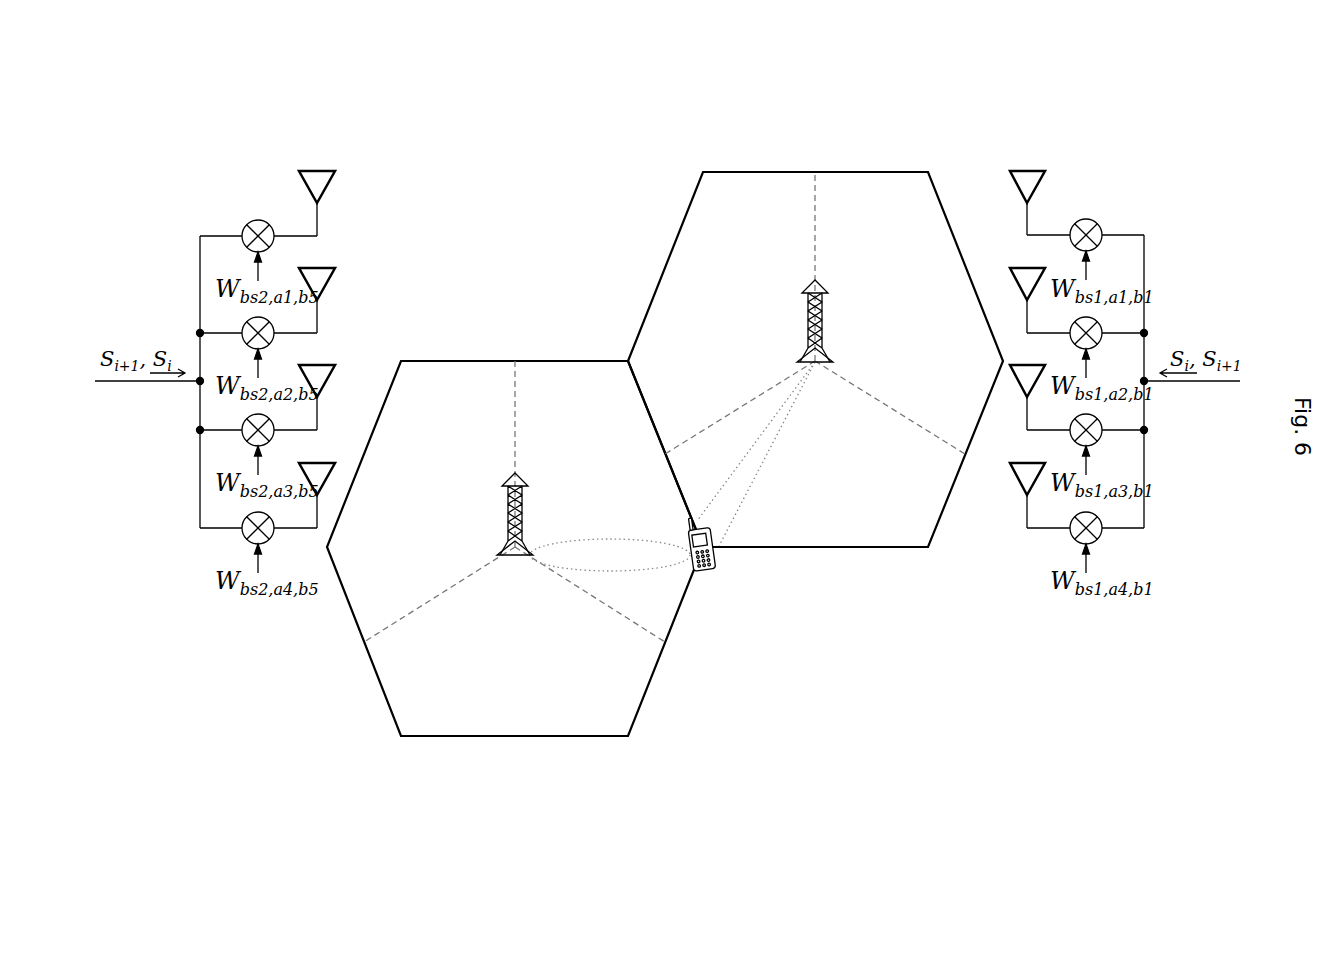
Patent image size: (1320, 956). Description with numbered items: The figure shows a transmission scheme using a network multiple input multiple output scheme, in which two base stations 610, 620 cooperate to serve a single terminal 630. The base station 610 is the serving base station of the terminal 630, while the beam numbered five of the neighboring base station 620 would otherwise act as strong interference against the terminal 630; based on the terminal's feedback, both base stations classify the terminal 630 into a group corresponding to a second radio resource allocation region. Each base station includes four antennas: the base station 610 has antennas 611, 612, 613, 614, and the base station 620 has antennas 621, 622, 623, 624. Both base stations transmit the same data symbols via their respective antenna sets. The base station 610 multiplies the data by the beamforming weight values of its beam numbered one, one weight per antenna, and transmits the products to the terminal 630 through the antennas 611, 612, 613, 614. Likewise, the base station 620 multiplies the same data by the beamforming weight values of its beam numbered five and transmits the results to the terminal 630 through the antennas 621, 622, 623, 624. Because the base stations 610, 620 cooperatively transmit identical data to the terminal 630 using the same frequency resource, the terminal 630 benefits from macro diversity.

The base station 610 is at (809, 316).
The antenna 611 is at (1011, 170).
The antenna 612 is at (1011, 267).
The antenna 613 is at (1013, 364).
The antenna 614 is at (1017, 475).
The base station 620 is at (507, 508).
The antenna 621 is at (333, 170).
The antenna 622 is at (333, 267).
The antenna 623 is at (333, 364).
The antenna 624 is at (333, 473).
The terminal 630 is at (716, 560).